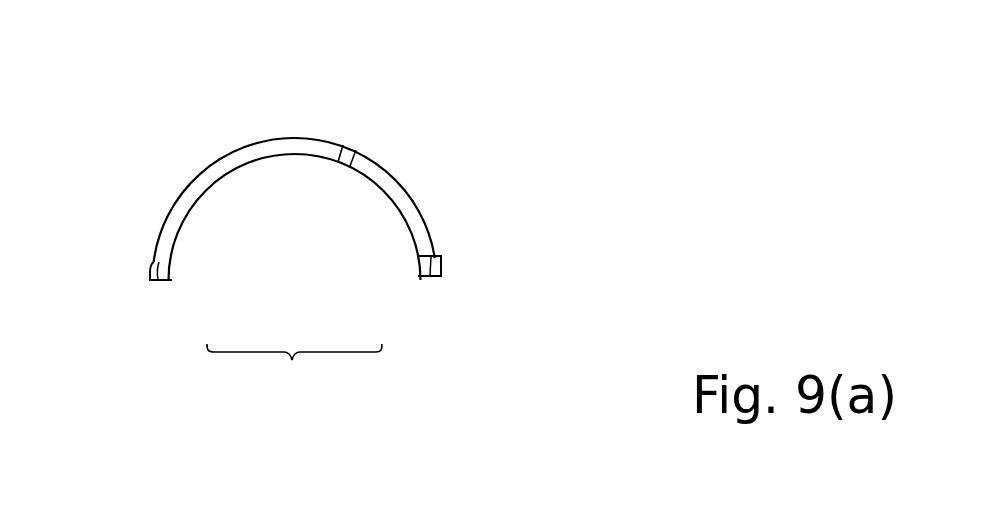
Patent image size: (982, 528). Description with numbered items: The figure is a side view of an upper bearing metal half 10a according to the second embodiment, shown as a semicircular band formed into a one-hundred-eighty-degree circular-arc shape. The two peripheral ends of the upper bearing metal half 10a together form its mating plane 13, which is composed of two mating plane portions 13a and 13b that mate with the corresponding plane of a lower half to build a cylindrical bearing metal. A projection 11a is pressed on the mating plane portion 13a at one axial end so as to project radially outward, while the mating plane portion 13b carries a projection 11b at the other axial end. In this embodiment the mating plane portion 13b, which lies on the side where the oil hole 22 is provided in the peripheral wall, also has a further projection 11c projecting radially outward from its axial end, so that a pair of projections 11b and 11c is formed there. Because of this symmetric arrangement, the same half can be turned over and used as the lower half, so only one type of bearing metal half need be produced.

The upper bearing metal half 10a is at (323, 118).
The projection 11a is at (150, 273).
The projection 11b is at (441, 257).
The projection 11c is at (492, 262).
The oil hole 22 is at (352, 141).
The mating plane portion 13a is at (172, 282).
The mating plane portion 13b is at (419, 278).
The mating plane 13 is at (294, 376).